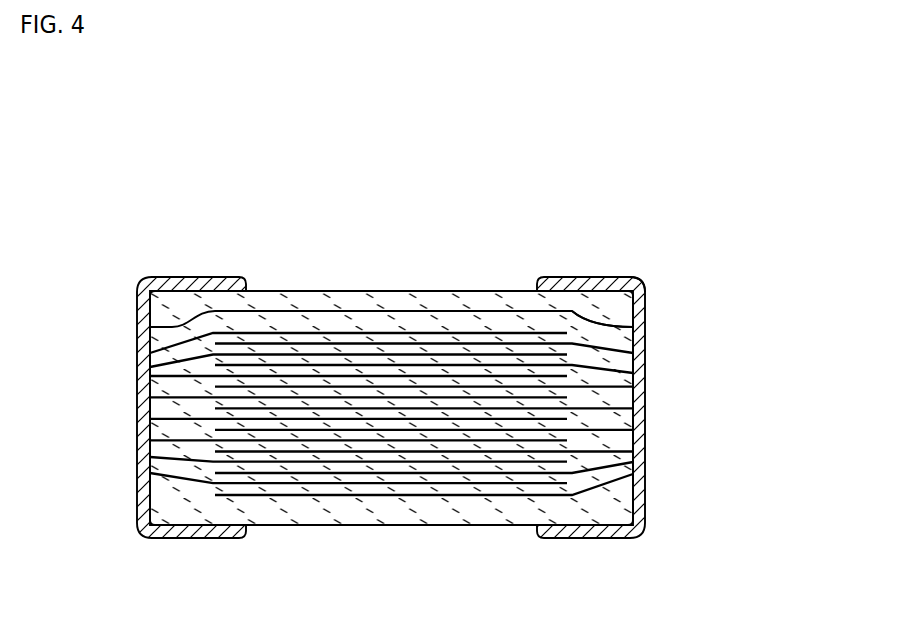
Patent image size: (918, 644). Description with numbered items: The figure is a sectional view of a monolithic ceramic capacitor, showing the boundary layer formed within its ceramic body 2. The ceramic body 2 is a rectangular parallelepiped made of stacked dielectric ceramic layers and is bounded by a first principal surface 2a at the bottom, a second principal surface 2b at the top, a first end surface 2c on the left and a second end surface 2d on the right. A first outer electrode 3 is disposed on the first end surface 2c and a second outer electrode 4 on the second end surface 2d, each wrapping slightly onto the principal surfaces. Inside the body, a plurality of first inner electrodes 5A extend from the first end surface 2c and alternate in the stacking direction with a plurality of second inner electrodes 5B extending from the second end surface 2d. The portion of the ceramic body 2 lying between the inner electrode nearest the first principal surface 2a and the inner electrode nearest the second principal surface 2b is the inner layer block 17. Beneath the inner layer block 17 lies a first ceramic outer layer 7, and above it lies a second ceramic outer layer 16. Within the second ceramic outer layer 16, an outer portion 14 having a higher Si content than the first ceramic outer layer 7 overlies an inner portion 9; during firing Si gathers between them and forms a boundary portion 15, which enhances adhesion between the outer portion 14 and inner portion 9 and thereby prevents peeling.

The ceramic body 2 is at (436, 290).
The first principal surface 2a is at (408, 525).
The second principal surface 2b is at (411, 305).
The first end surface 2c is at (162, 393).
The second end surface 2d is at (628, 339).
The first outer electrode 3 is at (138, 327).
The second outer electrode 4 is at (647, 394).
The first inner electrodes 5A is at (284, 333).
The second inner electrodes 5B is at (357, 343).
The first ceramic outer layer 7 is at (758, 495).
The inner portion 9 is at (641, 284).
The outer portion 14 is at (562, 301).
The boundary portion 15 is at (527, 311).
The second ceramic outer layer 16 is at (758, 291).
The inner layer block 17 is at (758, 337).